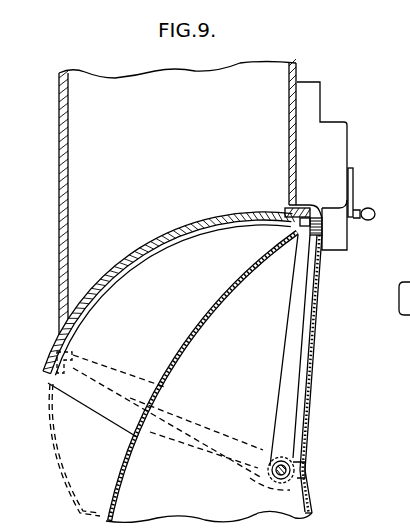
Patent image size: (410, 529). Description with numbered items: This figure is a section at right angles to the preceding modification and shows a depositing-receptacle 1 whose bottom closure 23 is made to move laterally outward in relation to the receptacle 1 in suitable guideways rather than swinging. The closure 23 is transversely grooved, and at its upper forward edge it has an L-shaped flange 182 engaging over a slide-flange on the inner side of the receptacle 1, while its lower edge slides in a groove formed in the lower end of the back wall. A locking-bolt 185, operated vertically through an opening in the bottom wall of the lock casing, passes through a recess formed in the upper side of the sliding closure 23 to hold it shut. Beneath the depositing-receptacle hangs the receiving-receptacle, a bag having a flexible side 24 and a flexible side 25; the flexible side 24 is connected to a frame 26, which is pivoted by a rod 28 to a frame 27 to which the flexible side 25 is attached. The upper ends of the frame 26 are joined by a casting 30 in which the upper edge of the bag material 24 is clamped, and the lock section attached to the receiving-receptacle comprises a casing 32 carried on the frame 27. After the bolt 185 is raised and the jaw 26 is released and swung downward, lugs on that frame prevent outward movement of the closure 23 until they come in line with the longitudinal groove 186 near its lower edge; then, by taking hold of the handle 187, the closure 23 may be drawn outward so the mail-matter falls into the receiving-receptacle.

The receptacle 1 is at (190, 196).
The bottom closure 23 is at (169, 282).
The L-shaped flange 182 is at (291, 208).
The locking-bolt 185 is at (295, 228).
The casting 30 is at (300, 236).
The casing 32 is at (332, 155).
The longitudinal groove 186 is at (73, 360).
The flexible side 24 is at (165, 387).
The frame 26 is at (284, 363).
The frame 27 is at (312, 366).
The rod 28 is at (295, 466).
The flexible side 25 is at (306, 500).
The handle 187 is at (391, 298).